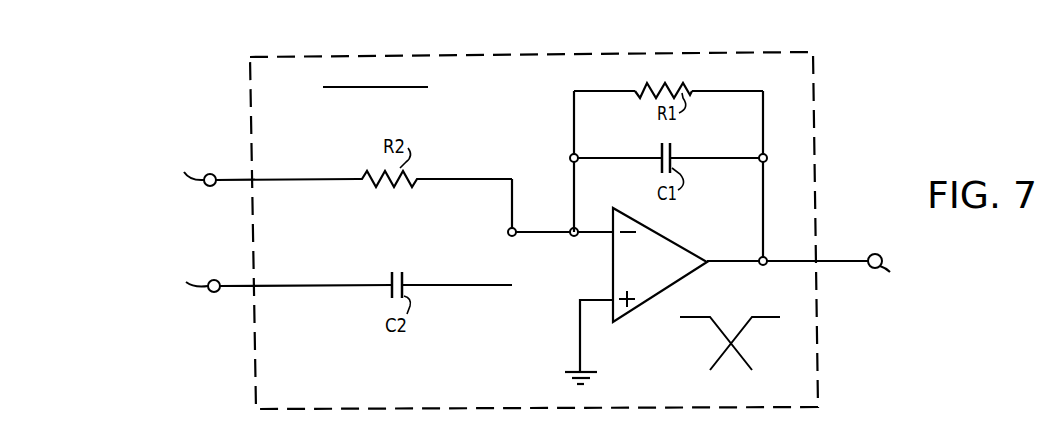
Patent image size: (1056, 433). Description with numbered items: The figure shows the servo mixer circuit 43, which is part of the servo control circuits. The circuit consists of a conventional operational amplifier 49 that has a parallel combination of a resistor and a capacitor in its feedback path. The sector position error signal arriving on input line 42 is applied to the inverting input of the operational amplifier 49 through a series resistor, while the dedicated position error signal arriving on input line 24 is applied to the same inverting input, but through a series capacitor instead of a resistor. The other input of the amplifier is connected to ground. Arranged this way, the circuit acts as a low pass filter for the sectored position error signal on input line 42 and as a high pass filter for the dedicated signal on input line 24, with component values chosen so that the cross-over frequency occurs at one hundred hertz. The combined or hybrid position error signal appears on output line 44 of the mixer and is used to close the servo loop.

The servo mixer circuit 43 is at (590, 51).
The input line 42 is at (236, 178).
The input line 24 is at (237, 284).
The operational amplifier 49 is at (684, 248).
The output line 44 is at (851, 259).